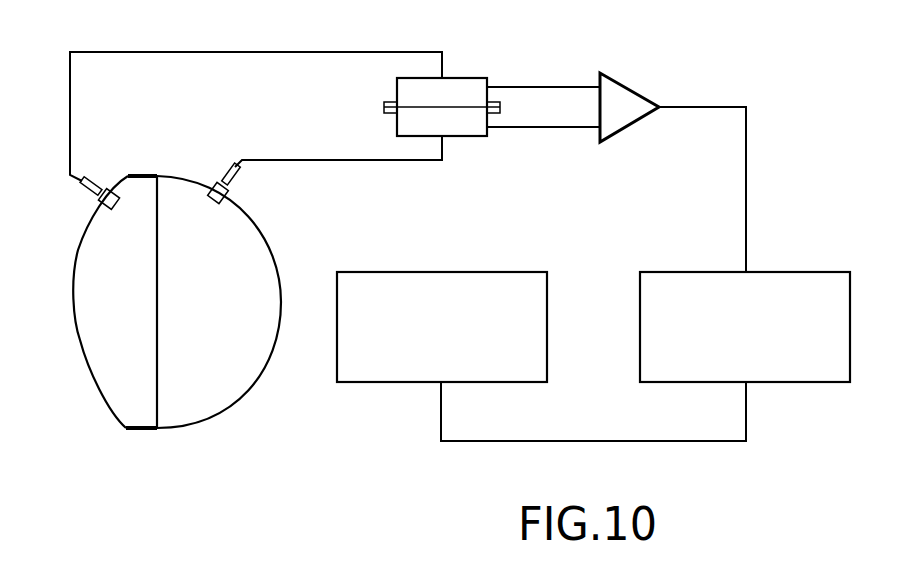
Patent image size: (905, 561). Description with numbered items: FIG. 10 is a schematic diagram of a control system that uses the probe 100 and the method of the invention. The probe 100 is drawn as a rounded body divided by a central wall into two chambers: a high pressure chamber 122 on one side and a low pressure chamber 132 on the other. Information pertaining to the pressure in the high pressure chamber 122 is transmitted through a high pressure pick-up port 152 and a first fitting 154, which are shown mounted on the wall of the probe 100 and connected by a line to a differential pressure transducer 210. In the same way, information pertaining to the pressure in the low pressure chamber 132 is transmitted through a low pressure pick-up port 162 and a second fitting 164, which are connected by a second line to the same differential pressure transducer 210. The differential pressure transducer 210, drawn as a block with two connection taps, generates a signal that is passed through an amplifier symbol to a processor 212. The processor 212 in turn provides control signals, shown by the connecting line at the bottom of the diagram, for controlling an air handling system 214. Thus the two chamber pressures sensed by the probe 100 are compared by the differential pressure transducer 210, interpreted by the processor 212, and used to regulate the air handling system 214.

The probe 100 is at (150, 160).
The high pressure chamber 122 is at (88, 337).
The low pressure chamber 132 is at (213, 407).
The high pressure pick-up port 152 is at (98, 207).
The first fitting 154 is at (85, 181).
The low pressure pick-up port 162 is at (213, 203).
The second fitting 164 is at (235, 178).
The differential pressure transducer 210 is at (465, 78).
The processor 212 is at (840, 272).
The air handling system 214 is at (517, 272).